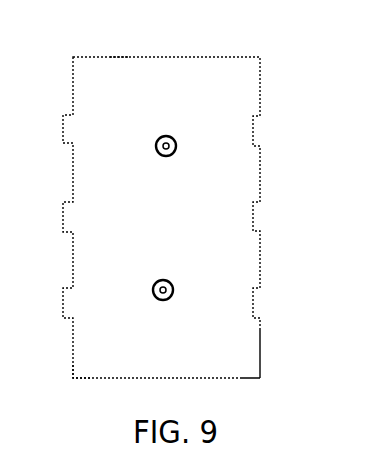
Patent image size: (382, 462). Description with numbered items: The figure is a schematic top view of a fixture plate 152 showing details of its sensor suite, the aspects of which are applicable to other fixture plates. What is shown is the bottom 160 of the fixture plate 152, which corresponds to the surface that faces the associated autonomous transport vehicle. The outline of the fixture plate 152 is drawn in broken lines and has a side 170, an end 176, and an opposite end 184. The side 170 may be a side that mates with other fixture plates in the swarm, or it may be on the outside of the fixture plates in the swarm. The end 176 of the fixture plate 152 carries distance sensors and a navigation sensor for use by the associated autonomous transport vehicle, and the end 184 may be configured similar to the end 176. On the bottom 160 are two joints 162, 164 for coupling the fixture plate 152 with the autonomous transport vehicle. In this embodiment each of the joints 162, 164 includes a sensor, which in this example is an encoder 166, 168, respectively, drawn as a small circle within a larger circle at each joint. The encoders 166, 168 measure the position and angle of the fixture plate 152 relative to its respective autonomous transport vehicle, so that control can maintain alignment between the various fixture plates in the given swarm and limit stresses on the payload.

The fixture plate 152 is at (262, 96).
The bottom 160 is at (243, 101).
The joint 162 is at (163, 156).
The joint 164 is at (170, 282).
The encoder 166 is at (159, 138).
The encoder 168 is at (157, 298).
The side 170 is at (261, 338).
The end 176 is at (84, 379).
The end 184 is at (115, 57).